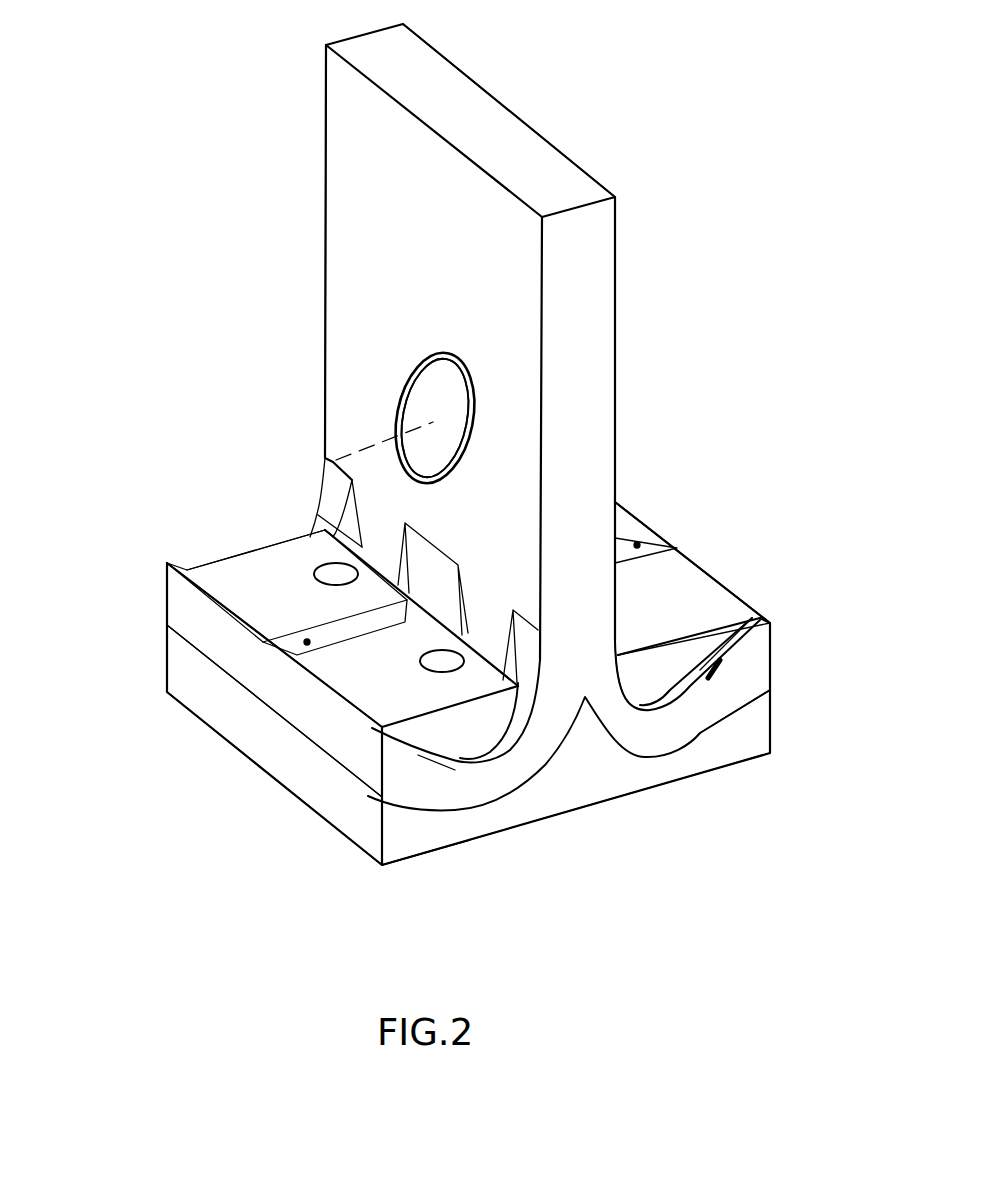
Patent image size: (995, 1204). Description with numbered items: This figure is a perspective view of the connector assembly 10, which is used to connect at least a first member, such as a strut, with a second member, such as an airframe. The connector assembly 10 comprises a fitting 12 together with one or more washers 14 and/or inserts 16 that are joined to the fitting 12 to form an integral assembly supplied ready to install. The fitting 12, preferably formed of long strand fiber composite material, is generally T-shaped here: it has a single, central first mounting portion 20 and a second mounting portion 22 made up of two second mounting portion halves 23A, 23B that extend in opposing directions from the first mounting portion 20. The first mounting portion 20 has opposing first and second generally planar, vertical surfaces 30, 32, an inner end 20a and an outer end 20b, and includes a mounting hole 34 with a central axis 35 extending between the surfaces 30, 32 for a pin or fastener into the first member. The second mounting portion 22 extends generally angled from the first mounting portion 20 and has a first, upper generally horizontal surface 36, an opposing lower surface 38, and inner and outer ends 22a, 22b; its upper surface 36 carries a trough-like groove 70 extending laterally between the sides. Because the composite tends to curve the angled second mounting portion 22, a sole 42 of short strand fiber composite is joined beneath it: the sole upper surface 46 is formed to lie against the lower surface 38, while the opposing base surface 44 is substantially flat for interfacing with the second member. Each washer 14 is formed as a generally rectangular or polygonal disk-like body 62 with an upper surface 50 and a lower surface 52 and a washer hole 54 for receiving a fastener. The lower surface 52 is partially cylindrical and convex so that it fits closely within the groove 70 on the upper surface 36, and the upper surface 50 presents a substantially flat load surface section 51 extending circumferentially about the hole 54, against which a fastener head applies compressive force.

The connector assembly 10 is at (142, 345).
The fitting 12 is at (640, 378).
The washer 14 is at (233, 542).
The insert 16 is at (447, 366).
The first mounting portion 20 is at (317, 215).
The inner end of first mounting portion 20a is at (597, 648).
The outer end of first mounting portion 20b is at (518, 143).
The second mounting portion 22 is at (517, 812).
The inner end of second mounting portion 22a is at (557, 742).
The outer end of second mounting portion 22b is at (280, 692).
The second mounting portion half 23A is at (168, 602).
The second mounting portion half 23B is at (773, 673).
The first surface of first mounting portion 30 is at (352, 266).
The second surface of first mounting portion 32 is at (620, 263).
The mounting hole 34 is at (448, 406).
The central axis 35 is at (346, 458).
The upper surface of second mounting portion 36 is at (403, 737).
The lower surface of second mounting portion 38 is at (478, 797).
The sole 42 is at (312, 808).
The base surface 44 is at (685, 785).
The upper surface of sole 46 is at (437, 800).
The washer upper surface 50 is at (278, 568).
The load surface section 51 is at (378, 548).
The washer lower surface 52 is at (420, 765).
The washer hole 54 is at (365, 522).
The disk-like body 62 is at (208, 562).
The groove 70 is at (303, 642).